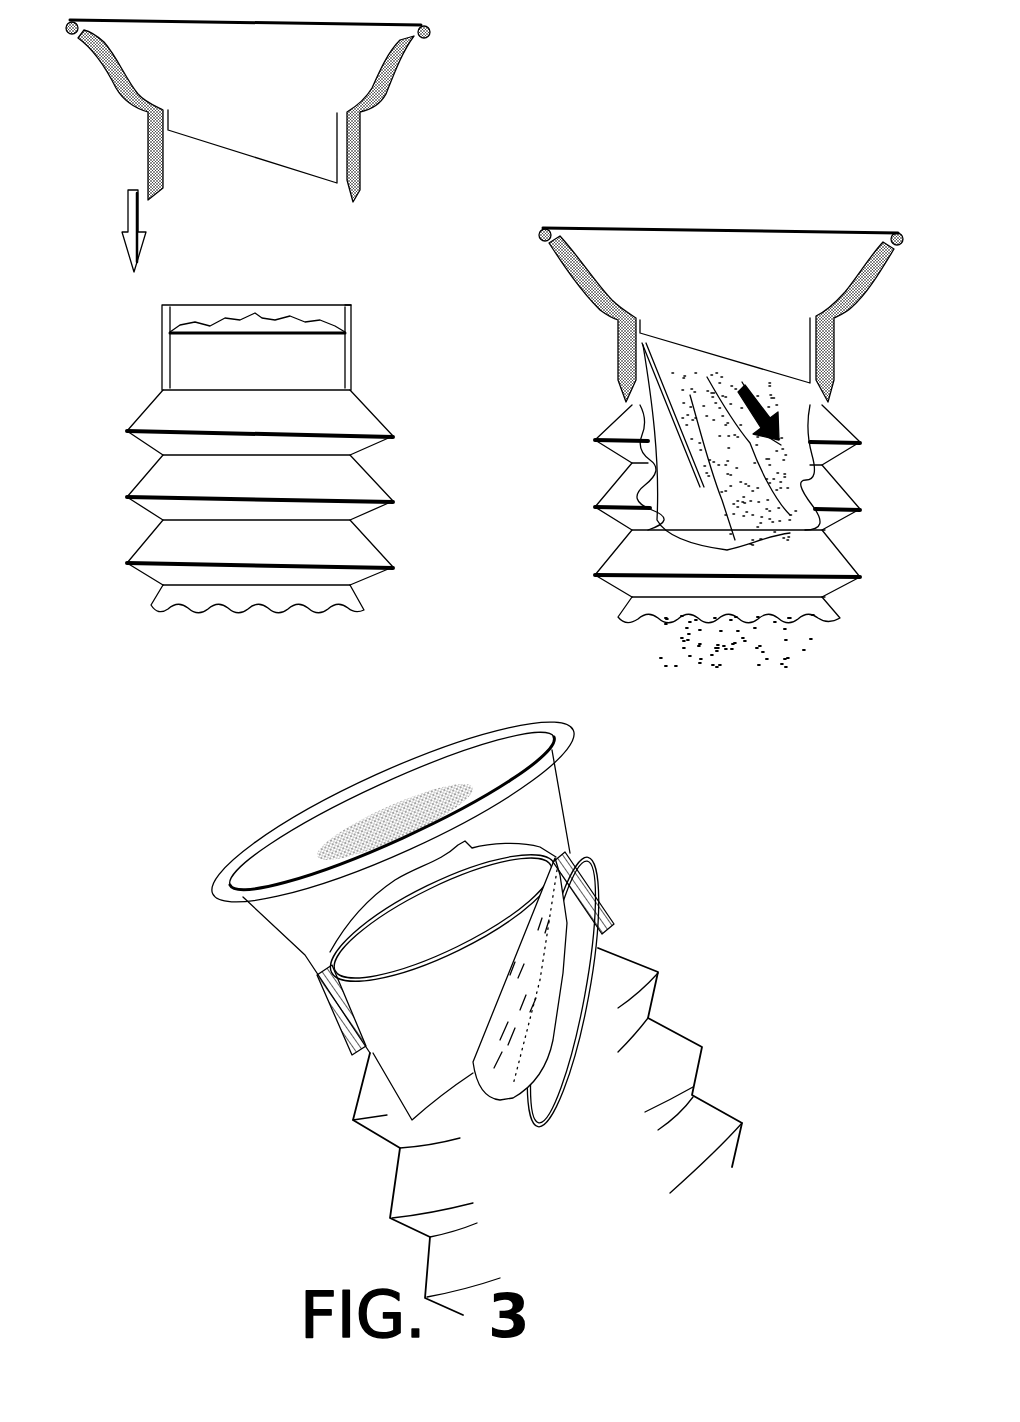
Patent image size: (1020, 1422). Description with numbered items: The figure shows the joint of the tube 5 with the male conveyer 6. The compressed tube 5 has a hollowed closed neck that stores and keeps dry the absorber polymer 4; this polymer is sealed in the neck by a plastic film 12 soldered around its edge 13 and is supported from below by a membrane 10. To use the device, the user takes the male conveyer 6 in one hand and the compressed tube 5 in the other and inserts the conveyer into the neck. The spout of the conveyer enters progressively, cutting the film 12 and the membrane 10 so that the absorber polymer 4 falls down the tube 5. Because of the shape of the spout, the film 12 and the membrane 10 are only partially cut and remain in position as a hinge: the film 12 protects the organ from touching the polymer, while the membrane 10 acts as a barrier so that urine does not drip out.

The absorber polymer 4 is at (257, 320).
The tube 5 is at (630, 486).
The male conveyer 6 is at (348, 65).
The membrane 10 is at (305, 335).
The plastic film 12 is at (308, 307).
The edge 13 is at (350, 307).